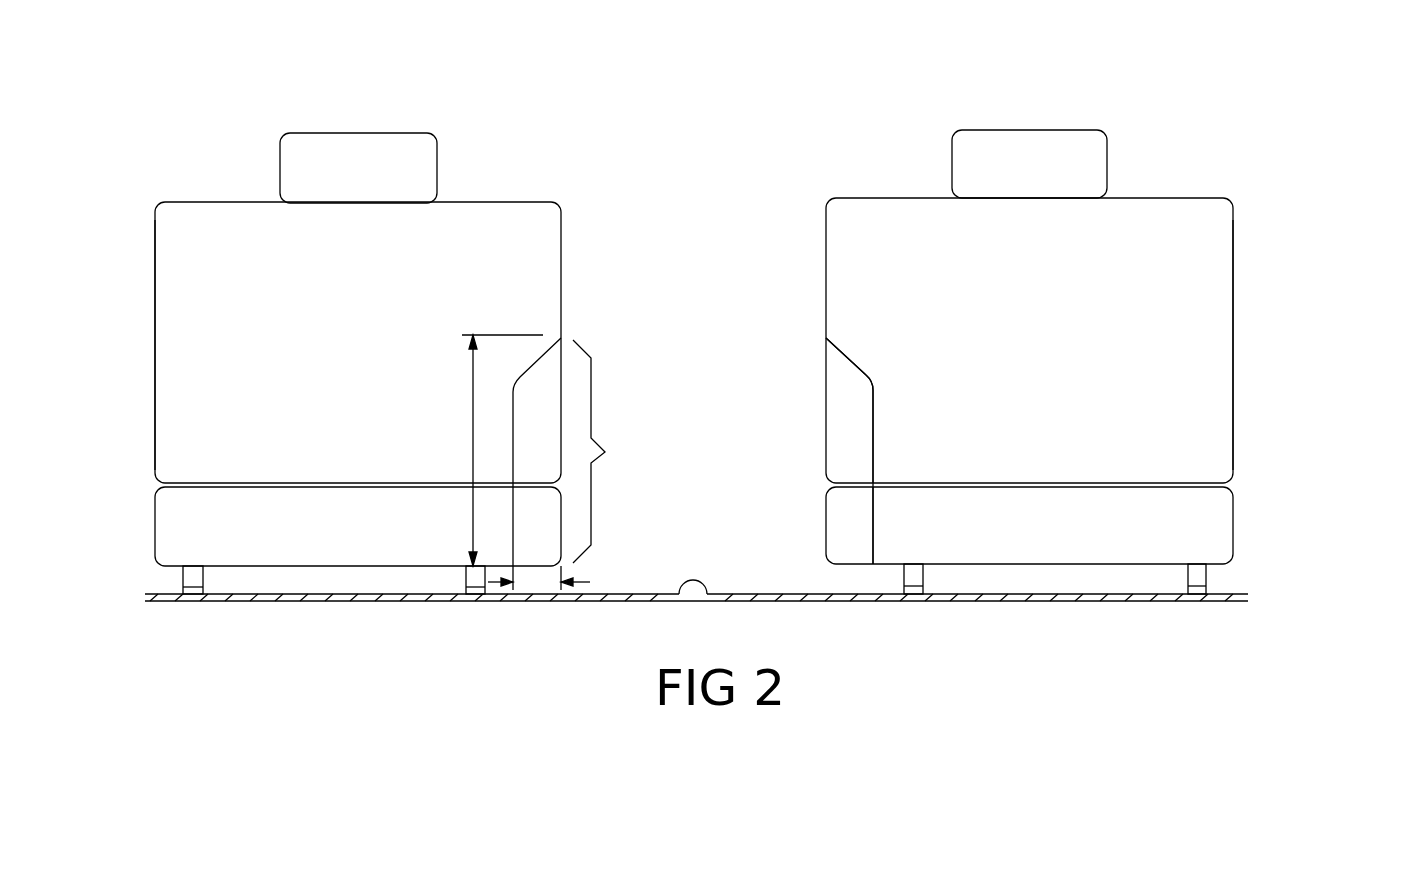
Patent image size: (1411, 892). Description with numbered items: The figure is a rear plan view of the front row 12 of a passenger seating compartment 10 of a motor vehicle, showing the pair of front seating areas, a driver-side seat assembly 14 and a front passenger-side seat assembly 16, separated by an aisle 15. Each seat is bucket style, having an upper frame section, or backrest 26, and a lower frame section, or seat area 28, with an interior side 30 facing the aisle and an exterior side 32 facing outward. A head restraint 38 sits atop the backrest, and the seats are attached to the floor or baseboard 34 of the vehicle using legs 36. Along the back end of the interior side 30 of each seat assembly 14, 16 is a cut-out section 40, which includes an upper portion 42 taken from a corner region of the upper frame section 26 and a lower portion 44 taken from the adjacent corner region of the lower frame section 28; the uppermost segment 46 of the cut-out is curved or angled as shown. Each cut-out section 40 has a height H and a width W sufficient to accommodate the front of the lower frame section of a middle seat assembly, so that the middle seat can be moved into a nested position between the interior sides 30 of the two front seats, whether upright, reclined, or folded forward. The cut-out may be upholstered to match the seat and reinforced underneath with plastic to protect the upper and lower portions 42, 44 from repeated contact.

The passenger seating compartment 10 is at (731, 353).
The front row 12 is at (1073, 352).
The driver-side seat assembly 14 is at (701, 364).
The aisle 15 is at (680, 588).
The front passenger-side seat assembly 16 is at (1033, 352).
The upper frame section 26 is at (1215, 432).
The lower frame section 28 is at (1215, 505).
The interior side 30 is at (585, 307).
The exterior side 32 is at (137, 385).
The baseboard 34 is at (745, 600).
The legs 36 is at (1200, 573).
The head restraint 38 is at (963, 157).
The cut-out section 40 is at (605, 451).
The upper portion 42 is at (843, 438).
The lower portion 44 is at (848, 513).
The uppermost segment 46 is at (857, 402).